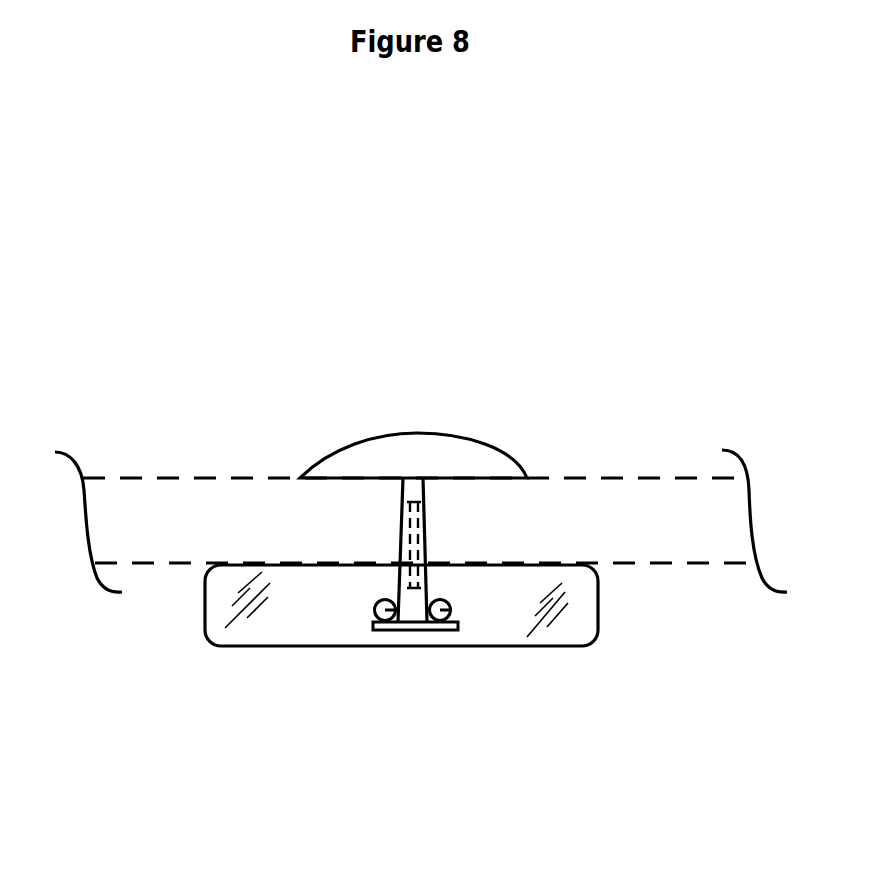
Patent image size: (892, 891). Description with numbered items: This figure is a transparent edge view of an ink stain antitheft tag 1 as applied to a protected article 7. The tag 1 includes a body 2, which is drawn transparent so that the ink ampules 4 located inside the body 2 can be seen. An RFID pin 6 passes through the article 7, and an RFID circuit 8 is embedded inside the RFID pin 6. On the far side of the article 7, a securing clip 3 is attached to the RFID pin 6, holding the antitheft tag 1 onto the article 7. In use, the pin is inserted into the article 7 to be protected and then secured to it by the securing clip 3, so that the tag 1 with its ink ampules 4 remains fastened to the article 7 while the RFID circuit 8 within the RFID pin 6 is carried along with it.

The ink stain antitheft tag 1 is at (172, 737).
The body 2 is at (580, 628).
The securing clip 3 is at (442, 432).
The ink ampules 4 is at (375, 612).
The RFID pin 6 is at (413, 607).
The article 7 is at (582, 517).
The RFID circuit 8 is at (404, 556).